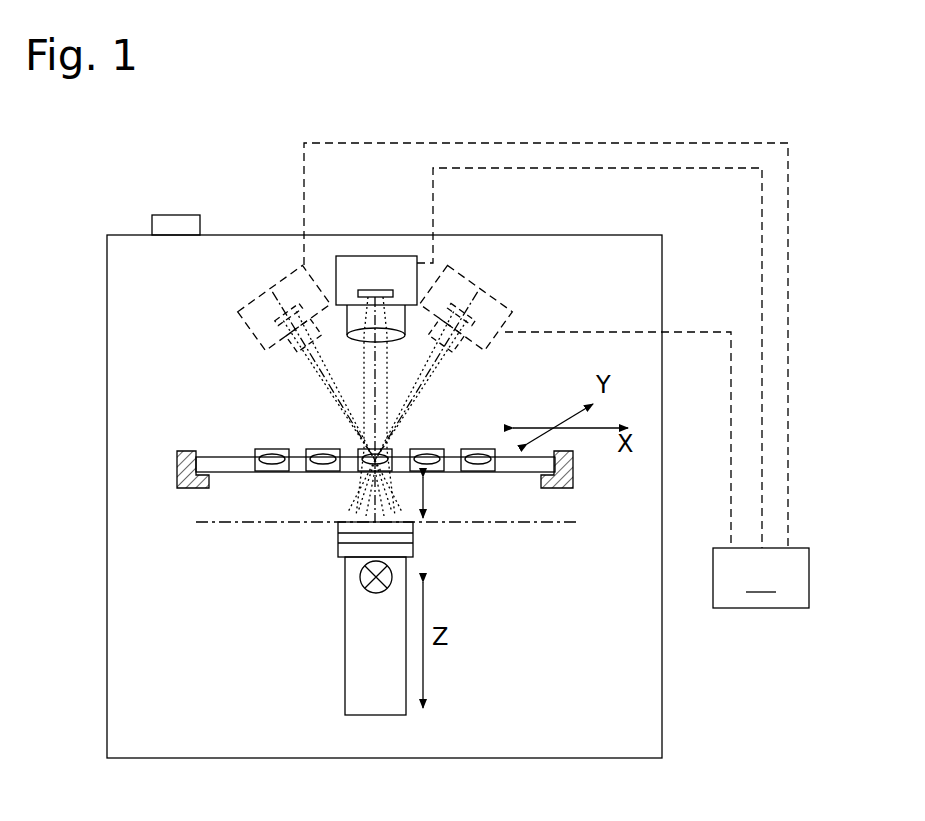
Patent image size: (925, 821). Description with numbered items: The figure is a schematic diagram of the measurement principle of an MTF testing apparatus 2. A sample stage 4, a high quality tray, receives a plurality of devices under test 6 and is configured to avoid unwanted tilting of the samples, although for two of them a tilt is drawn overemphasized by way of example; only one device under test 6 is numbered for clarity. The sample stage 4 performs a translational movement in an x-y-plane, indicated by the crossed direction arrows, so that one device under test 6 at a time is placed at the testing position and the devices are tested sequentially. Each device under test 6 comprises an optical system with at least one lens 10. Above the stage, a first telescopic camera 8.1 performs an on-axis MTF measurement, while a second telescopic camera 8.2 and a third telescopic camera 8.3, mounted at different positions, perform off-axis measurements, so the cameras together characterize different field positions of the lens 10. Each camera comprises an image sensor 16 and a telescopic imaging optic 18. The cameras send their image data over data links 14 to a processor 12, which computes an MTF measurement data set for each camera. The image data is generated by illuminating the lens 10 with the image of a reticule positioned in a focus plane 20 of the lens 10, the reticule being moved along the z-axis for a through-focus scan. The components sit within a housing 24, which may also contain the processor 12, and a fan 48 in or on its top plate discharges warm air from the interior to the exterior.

The MTF testing apparatus 2 is at (798, 642).
The sample stage 4 is at (217, 462).
The device under test 6 is at (357, 456).
The first telescopic camera 8.1 is at (377, 267).
The second telescopic camera 8.2 is at (272, 297).
The third telescopic camera 8.3 is at (470, 292).
The lens 10 is at (390, 456).
The processor 12 is at (761, 578).
The data links 14 is at (732, 427).
The image sensor 16 is at (285, 322).
The telescopic imaging optic 18 is at (293, 360).
The focus plane 20 is at (264, 522).
The housing 24 is at (107, 612).
The fan 48 is at (178, 228).